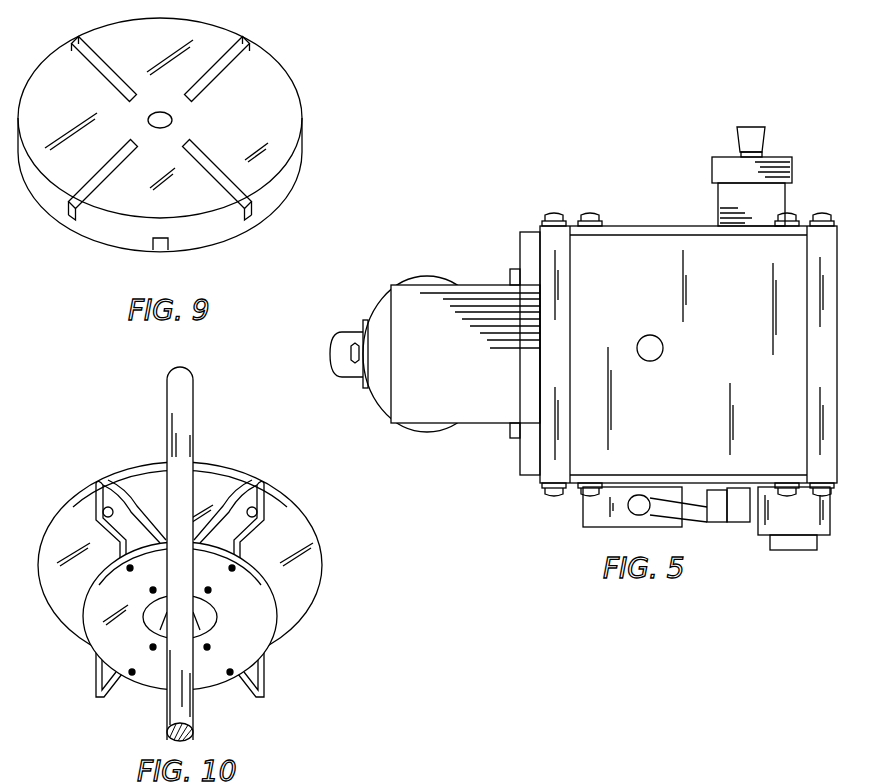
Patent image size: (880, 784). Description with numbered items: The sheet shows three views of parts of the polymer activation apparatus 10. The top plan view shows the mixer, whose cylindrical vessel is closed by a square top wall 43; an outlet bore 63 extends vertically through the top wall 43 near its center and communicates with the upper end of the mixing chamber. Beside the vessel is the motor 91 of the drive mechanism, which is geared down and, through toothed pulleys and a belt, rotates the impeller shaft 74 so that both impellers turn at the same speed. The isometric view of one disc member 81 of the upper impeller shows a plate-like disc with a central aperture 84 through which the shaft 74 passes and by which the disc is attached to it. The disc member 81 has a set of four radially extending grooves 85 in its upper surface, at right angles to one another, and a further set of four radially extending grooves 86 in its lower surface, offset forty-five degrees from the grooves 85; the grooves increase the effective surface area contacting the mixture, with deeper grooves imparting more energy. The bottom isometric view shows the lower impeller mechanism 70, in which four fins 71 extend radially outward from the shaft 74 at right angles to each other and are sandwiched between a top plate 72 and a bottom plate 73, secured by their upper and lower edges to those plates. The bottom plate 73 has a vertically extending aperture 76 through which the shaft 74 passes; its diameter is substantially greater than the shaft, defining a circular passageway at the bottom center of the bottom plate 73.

In FIG. 5, the polymer activation apparatus 10 is at (583, 338).
In FIG. 5, the top wall 43 is at (603, 240).
In FIG. 5, the outlet bore 63 is at (663, 348).
In FIG. 5, the motor 91 is at (382, 392).
In FIG. 10, the impeller mechanism 70 is at (170, 543).
In FIG. 10, the fins 71 is at (108, 487).
In FIG. 10, the top plate 72 is at (203, 473).
In FIG. 10, the bottom plate 73 is at (98, 637).
In FIG. 10, the shaft 74 is at (187, 398).
In FIG. 10, the aperture 76 is at (207, 644).
In FIG. 9, the disc member 81 is at (288, 155).
In FIG. 9, the central aperture 84 is at (173, 113).
In FIG. 9, the grooves 85 is at (82, 39).
In FIG. 9, the grooves 86 is at (167, 248).